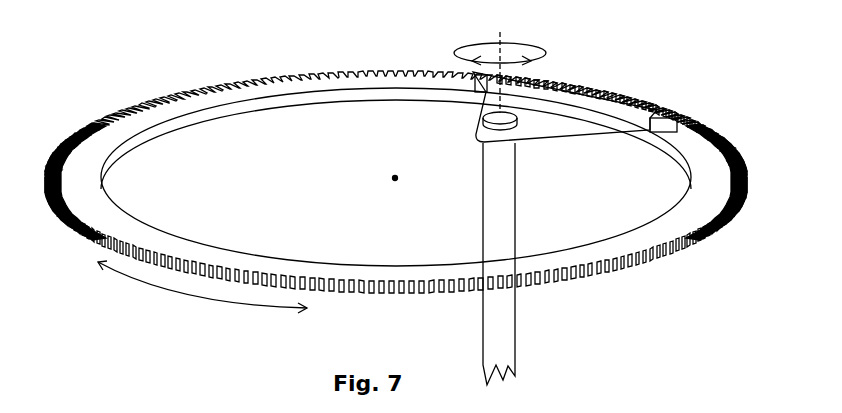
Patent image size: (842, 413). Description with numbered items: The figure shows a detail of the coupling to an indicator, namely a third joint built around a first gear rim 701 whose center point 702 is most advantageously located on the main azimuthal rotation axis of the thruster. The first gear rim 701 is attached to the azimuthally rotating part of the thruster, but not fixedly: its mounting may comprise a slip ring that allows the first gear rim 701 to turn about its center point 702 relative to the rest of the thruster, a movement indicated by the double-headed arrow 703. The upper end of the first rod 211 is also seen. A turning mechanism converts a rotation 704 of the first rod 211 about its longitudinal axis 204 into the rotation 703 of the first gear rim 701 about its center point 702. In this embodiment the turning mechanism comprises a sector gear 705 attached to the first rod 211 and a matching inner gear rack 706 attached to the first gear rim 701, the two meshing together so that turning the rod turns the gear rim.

The first gear rim 701 is at (150, 104).
The center point 702 is at (394, 176).
The double-headed arrow 703 is at (167, 294).
The rotation of the first rod 704 is at (547, 55).
The sector gear 705 is at (548, 138).
The inner gear rack 706 is at (657, 114).
The longitudinal axis 204 is at (503, 42).
The first rod 211 is at (518, 340).